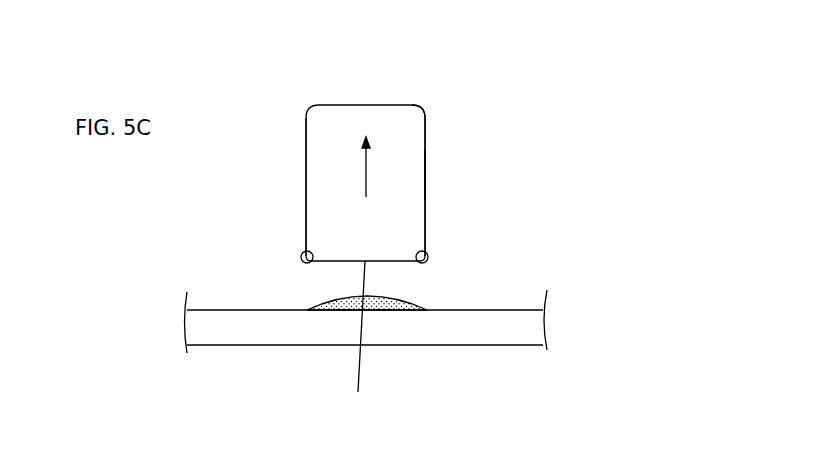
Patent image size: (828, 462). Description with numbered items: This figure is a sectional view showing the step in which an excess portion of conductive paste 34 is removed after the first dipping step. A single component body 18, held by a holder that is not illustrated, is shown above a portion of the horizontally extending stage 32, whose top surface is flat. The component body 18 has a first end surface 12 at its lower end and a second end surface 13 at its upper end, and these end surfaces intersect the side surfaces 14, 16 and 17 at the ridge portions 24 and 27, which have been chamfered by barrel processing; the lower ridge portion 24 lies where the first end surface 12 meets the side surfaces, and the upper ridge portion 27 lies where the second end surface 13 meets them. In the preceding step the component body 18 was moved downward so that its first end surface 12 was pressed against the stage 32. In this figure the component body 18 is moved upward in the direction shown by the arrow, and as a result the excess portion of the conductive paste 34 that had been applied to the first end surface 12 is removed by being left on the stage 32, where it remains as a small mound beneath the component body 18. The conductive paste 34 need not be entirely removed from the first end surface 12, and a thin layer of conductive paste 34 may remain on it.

The first end surface 12 is at (361, 345).
The second end surface 13 is at (365, 105).
The side surface 14 is at (320, 143).
The side surface 16 is at (307, 185).
The side surface 17 is at (425, 183).
The component body 18 is at (427, 143).
The ridge portion 24 is at (302, 262).
The ridge portion 27 is at (418, 106).
The stage 32 is at (542, 326).
The conductive paste 34 is at (395, 300).